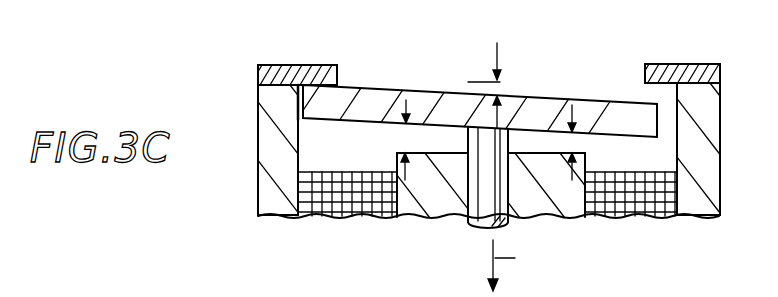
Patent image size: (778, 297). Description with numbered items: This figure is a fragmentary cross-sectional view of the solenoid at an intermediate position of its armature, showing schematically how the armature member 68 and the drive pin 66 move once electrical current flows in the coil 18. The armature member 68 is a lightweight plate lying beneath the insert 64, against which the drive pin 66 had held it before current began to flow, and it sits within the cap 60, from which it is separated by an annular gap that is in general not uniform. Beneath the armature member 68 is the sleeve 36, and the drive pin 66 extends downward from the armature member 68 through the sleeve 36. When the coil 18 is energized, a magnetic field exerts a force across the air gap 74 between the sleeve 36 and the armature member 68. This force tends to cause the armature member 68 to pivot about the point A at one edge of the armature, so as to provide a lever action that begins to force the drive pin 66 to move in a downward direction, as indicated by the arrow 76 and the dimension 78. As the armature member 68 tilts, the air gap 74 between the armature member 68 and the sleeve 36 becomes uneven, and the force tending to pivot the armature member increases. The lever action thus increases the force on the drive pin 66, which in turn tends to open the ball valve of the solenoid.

The coil 18 is at (330, 217).
The sleeve 36 is at (420, 215).
The cap 60 is at (262, 185).
The insert 64 is at (311, 53).
The drive pin 66 is at (470, 227).
The armature member 68 is at (397, 88).
The air gap 74 is at (405, 137).
The arrow 76 is at (518, 265).
The dimension 78 is at (500, 82).
The point A is at (304, 126).